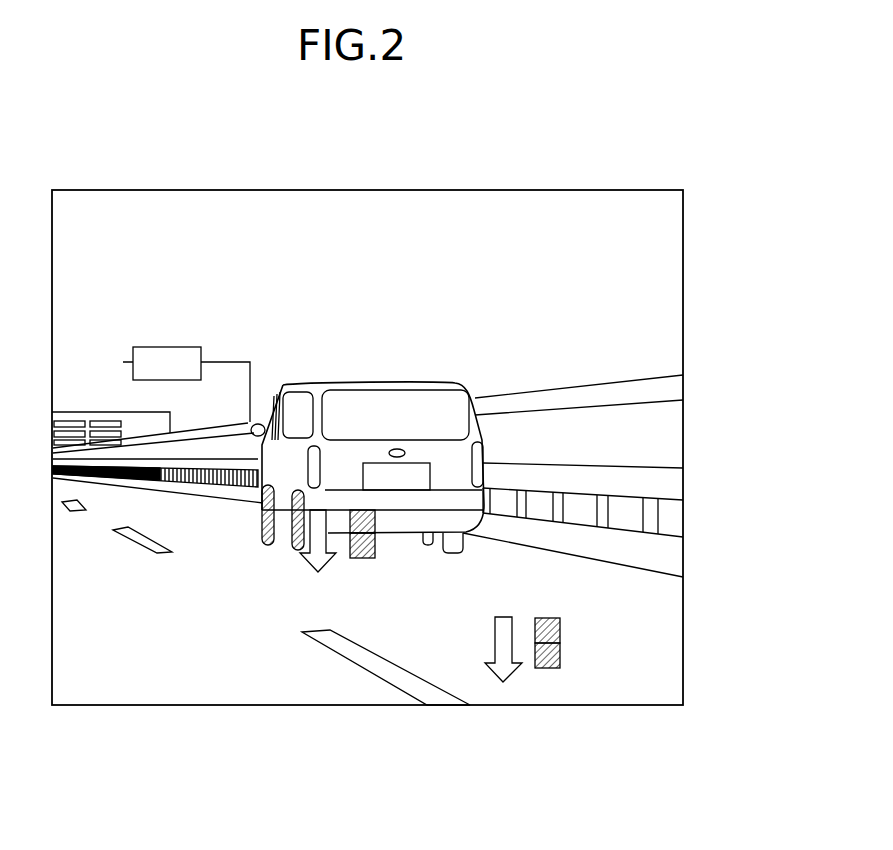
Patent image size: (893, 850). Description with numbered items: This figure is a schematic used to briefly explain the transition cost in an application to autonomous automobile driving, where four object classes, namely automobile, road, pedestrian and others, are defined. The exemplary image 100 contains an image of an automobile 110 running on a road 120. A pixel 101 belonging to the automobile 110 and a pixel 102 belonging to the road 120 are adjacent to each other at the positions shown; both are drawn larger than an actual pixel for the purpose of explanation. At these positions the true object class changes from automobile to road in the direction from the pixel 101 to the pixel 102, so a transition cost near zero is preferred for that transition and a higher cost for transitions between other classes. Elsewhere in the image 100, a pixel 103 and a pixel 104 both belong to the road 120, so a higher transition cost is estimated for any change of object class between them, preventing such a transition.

The image 100 is at (612, 190).
The automobile 110 is at (434, 383).
The road 120 is at (110, 673).
The pixel 101 is at (378, 522).
The pixel 102 is at (375, 522).
The pixel 103 is at (560, 631).
The pixel 104 is at (560, 655).